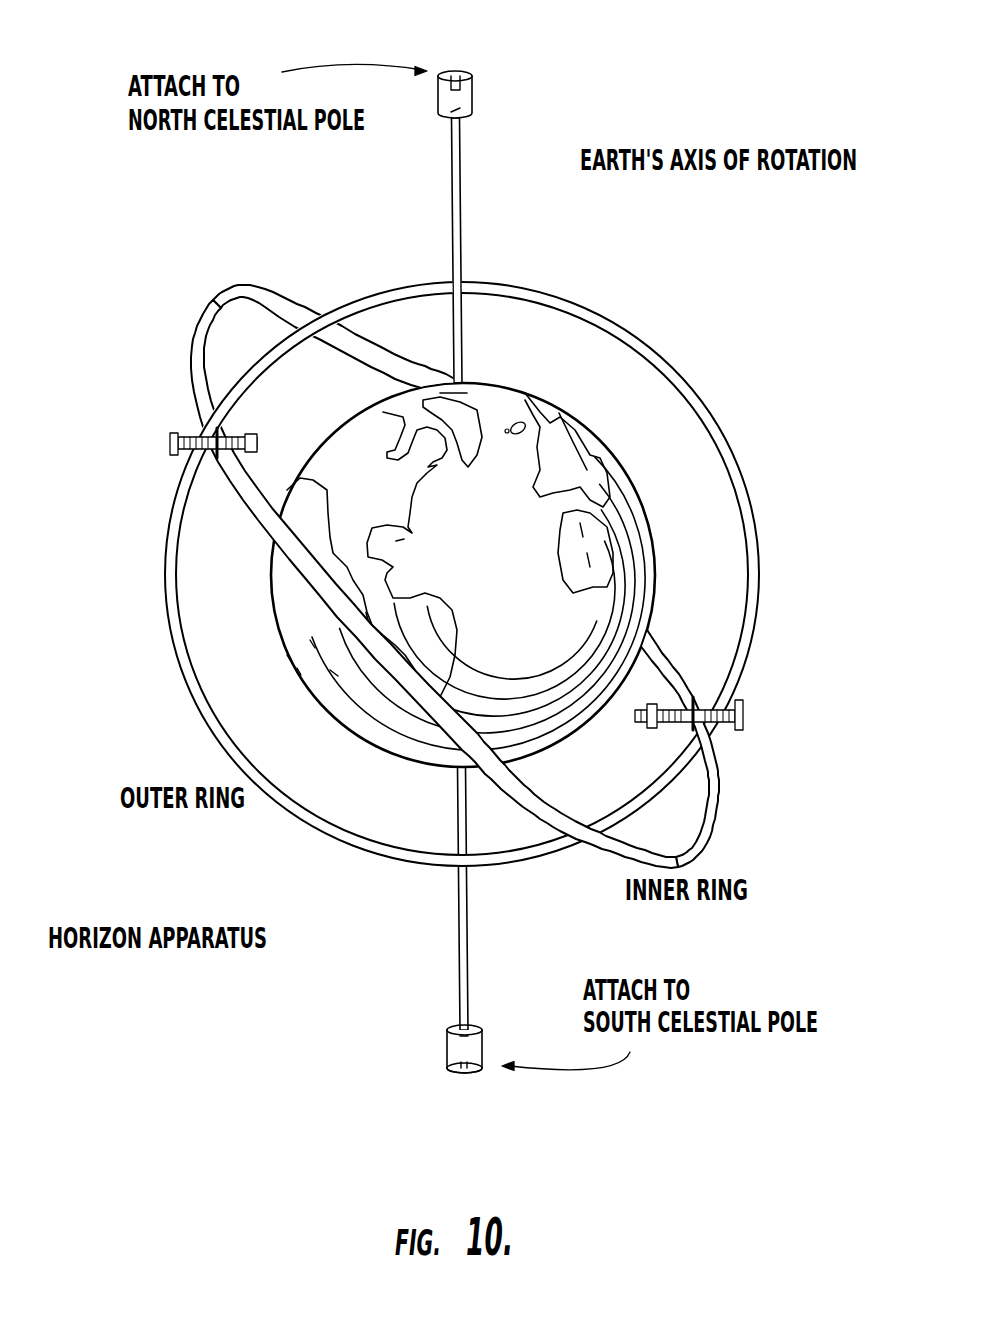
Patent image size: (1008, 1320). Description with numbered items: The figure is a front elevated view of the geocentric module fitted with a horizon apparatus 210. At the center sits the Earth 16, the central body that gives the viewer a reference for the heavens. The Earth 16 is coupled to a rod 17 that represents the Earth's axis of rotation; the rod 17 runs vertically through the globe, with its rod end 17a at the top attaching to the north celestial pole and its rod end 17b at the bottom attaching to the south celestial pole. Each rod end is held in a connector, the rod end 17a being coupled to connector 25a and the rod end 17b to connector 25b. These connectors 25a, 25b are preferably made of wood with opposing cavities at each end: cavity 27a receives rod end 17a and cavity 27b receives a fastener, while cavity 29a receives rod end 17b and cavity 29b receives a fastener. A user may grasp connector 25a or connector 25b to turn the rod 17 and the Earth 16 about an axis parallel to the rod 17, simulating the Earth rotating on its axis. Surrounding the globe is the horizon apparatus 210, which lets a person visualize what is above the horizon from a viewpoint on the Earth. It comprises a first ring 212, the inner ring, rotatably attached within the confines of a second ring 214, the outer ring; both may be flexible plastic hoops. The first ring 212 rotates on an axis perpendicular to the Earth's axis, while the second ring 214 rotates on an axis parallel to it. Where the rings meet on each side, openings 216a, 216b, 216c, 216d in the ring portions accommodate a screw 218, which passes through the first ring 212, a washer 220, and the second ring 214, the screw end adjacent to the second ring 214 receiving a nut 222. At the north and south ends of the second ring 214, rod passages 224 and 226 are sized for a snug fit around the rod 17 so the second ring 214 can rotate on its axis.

The Earth 16 is at (560, 752).
The rod 17 is at (454, 180).
The rod end 17a is at (470, 138).
The rod end 17b is at (447, 1018).
The connector 25a is at (517, 62).
The connector 25b is at (459, 1051).
The cavity 27a is at (460, 118).
The cavity 27b is at (456, 80).
The cavity 29a is at (466, 1030).
The cavity 29b is at (466, 1076).
The horizon apparatus 210 is at (462, 566).
The first ring 212 is at (392, 356).
The second ring 214 is at (612, 323).
The opening 216a is at (205, 435).
The opening 216b is at (715, 712).
The opening 216c is at (215, 432).
The opening 216d is at (690, 703).
The screw 218 is at (173, 443).
The washer 220 is at (217, 470).
The nut 222 is at (258, 440).
The rod passage 224 is at (468, 283).
The rod passage 226 is at (467, 868).